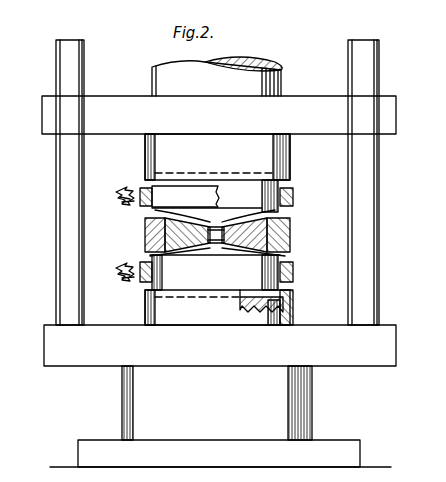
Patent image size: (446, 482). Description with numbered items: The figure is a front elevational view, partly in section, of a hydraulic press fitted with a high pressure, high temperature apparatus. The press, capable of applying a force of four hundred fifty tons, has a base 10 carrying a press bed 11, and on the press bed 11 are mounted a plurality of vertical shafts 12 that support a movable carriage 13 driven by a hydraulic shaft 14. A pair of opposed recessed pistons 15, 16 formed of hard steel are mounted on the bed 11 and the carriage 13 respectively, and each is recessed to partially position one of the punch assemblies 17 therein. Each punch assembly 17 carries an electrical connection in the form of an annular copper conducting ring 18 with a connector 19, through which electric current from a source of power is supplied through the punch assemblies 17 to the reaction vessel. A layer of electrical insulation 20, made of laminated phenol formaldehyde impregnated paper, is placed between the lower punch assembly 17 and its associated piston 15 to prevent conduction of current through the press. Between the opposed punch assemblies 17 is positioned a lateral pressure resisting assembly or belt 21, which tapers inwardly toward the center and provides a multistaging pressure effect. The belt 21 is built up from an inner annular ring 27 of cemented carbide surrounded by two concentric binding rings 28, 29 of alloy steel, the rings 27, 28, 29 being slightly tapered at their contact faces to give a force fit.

The base 10 is at (153, 413).
The press bed 11 is at (100, 356).
The vertical shafts 12 is at (70, 205).
The movable carriage 13 is at (311, 104).
The hydraulic shaft 14 is at (168, 78).
The lower recessed piston 15 is at (282, 317).
The upper recessed piston 16 is at (282, 152).
The punch assemblies 17 is at (240, 192).
The annular copper conducting ring 18 is at (150, 190).
The connector 19 is at (128, 193).
The layer of electrical insulation 20 is at (252, 312).
The lateral pressure resisting assembly 21 is at (291, 238).
The inner annular ring 27 is at (223, 227).
The inner binding ring 28 is at (187, 261).
The outer binding ring 29 is at (152, 241).